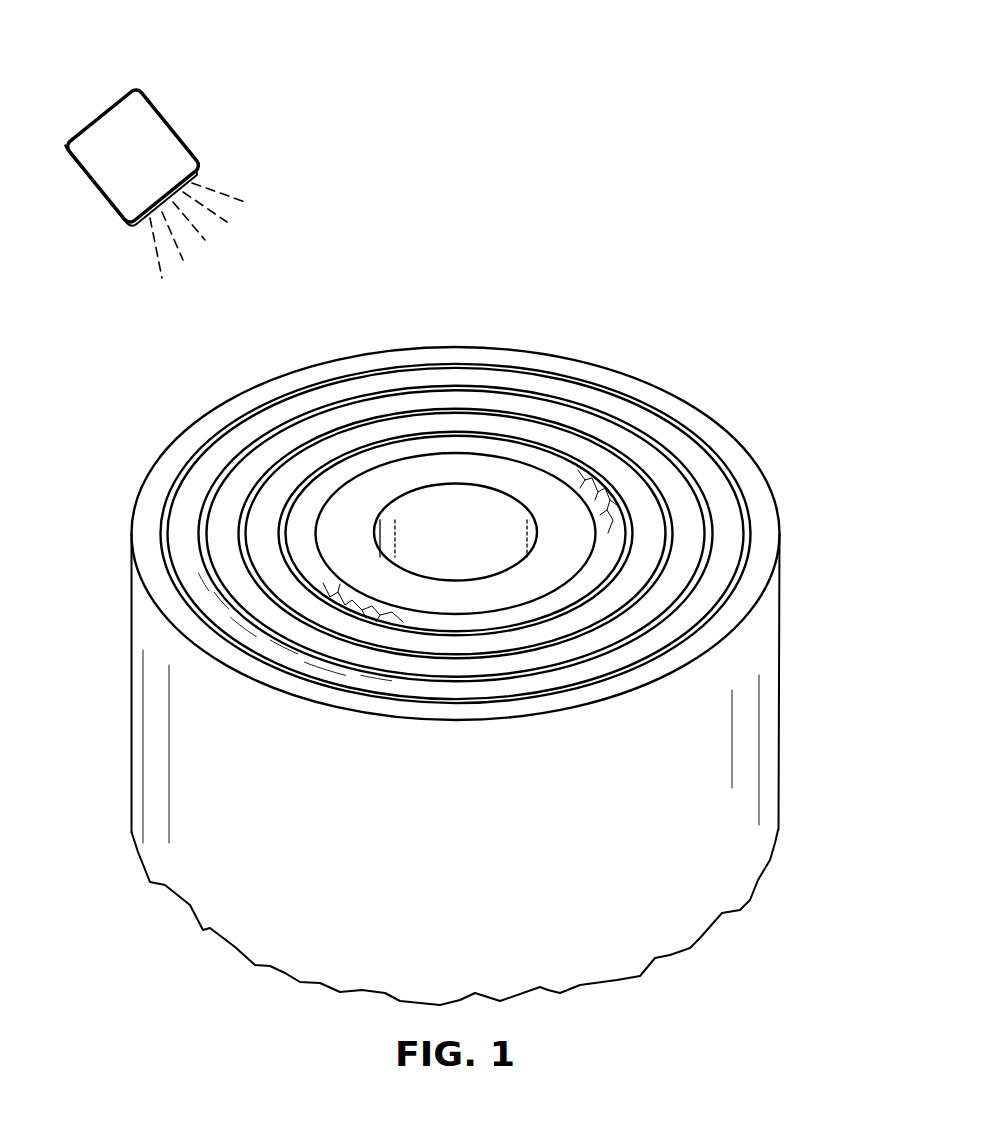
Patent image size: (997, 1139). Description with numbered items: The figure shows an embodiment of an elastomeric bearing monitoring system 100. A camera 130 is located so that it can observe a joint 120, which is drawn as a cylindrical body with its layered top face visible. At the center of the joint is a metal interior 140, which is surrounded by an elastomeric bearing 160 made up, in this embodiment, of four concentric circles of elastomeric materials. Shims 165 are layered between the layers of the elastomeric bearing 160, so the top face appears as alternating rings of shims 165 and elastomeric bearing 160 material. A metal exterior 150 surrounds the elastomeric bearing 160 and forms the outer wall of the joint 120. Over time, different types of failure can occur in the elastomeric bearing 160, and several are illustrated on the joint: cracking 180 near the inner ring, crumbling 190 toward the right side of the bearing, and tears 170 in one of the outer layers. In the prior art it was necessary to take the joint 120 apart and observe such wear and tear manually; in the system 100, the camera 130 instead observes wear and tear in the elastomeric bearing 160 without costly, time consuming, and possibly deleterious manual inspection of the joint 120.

The elastomeric bearing monitoring system 100 is at (683, 82).
The joint 120 is at (103, 633).
The camera 130 is at (97, 115).
The metal interior 140 is at (455, 475).
The metal exterior 150 is at (782, 700).
The elastomeric bearing 160 is at (273, 410).
The shims 165 is at (555, 375).
The tears 170 is at (298, 678).
The cracking 180 is at (333, 582).
The crumbling 190 is at (588, 503).